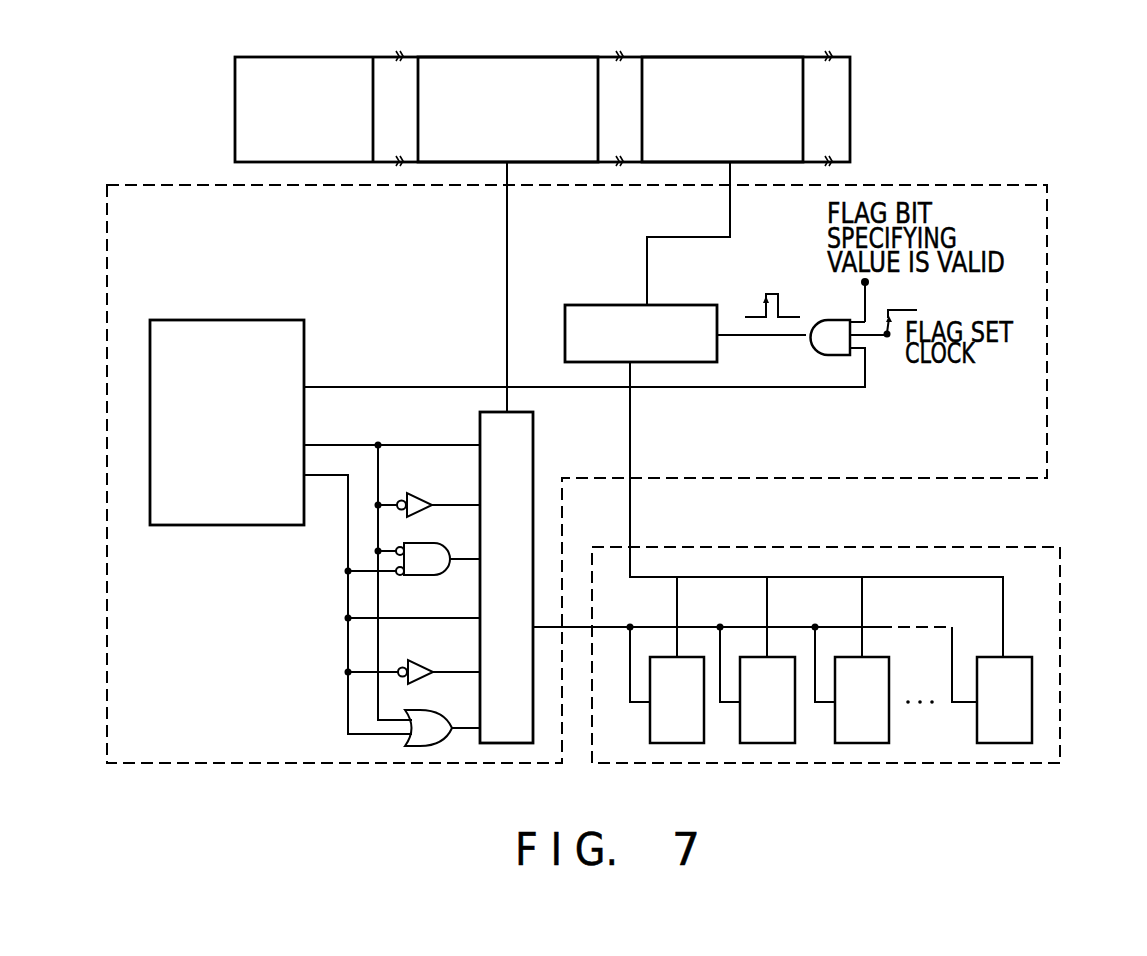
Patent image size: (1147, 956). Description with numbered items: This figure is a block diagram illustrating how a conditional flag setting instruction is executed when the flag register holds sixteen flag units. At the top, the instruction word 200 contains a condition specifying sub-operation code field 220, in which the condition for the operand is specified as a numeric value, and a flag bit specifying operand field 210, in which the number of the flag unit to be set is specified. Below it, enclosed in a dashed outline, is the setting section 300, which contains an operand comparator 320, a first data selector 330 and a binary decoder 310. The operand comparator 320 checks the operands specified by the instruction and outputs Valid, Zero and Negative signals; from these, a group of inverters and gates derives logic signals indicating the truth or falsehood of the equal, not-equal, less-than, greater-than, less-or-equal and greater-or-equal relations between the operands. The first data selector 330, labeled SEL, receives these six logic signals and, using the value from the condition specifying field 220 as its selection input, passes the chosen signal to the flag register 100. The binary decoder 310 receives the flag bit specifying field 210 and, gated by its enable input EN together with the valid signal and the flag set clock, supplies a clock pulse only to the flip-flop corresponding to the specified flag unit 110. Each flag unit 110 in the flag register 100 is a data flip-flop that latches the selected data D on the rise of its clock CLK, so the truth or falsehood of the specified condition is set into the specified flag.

The flag register 100 is at (796, 562).
The flag unit 110 is at (650, 727).
The instruction word 200 is at (169, 120).
The flag bit specifying operand field 210 is at (727, 57).
The condition specifying sub-operation code field 220 is at (505, 57).
The setting section 300 is at (1048, 388).
The binary decoder 310 is at (686, 305).
The operand comparator 320 is at (223, 320).
The first data selector 330 is at (536, 430).